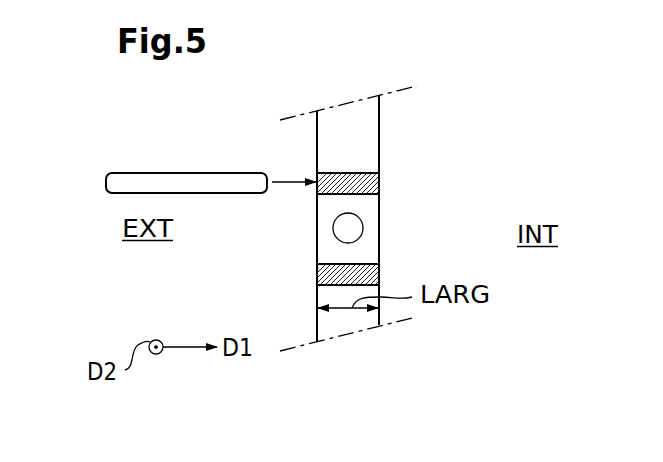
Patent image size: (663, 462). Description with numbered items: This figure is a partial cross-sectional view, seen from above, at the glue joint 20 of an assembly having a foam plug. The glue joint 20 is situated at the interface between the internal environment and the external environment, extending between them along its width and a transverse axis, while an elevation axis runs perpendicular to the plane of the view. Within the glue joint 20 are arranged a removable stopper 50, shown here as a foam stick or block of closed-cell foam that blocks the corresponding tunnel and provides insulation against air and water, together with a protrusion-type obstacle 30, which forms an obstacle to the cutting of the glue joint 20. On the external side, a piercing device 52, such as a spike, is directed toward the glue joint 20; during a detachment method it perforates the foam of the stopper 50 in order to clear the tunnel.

The glue joint 20 is at (363, 143).
The removable stopper 50 is at (363, 186).
The obstacle 30 is at (348, 228).
The piercing device 52 is at (199, 172).